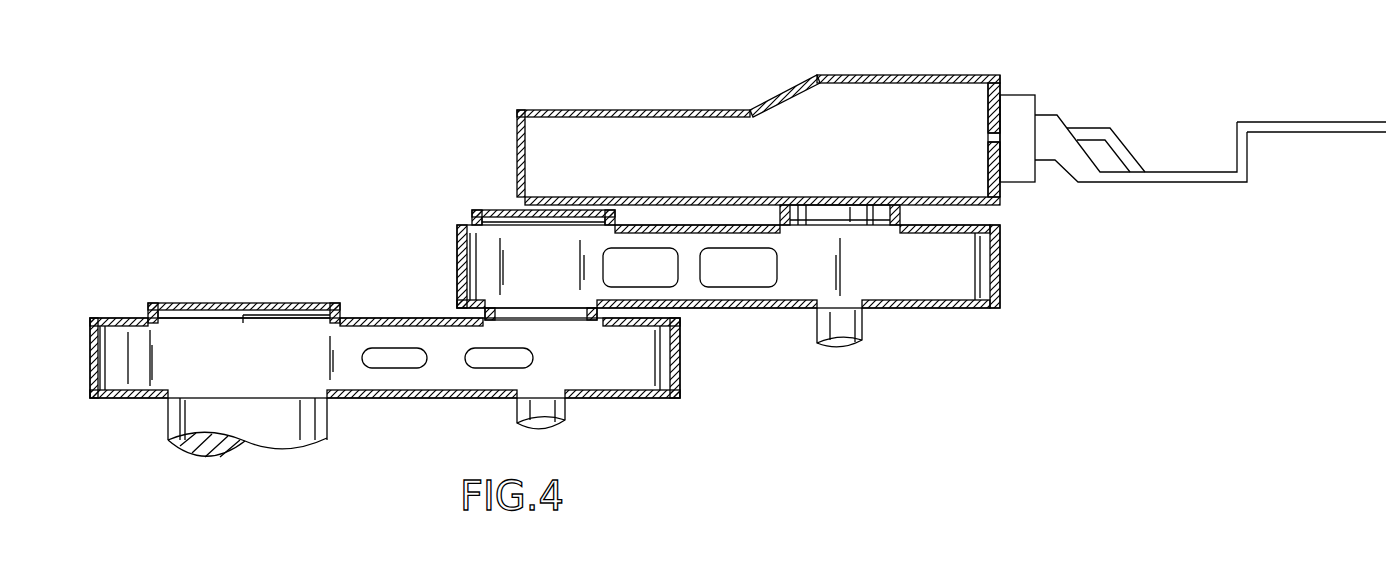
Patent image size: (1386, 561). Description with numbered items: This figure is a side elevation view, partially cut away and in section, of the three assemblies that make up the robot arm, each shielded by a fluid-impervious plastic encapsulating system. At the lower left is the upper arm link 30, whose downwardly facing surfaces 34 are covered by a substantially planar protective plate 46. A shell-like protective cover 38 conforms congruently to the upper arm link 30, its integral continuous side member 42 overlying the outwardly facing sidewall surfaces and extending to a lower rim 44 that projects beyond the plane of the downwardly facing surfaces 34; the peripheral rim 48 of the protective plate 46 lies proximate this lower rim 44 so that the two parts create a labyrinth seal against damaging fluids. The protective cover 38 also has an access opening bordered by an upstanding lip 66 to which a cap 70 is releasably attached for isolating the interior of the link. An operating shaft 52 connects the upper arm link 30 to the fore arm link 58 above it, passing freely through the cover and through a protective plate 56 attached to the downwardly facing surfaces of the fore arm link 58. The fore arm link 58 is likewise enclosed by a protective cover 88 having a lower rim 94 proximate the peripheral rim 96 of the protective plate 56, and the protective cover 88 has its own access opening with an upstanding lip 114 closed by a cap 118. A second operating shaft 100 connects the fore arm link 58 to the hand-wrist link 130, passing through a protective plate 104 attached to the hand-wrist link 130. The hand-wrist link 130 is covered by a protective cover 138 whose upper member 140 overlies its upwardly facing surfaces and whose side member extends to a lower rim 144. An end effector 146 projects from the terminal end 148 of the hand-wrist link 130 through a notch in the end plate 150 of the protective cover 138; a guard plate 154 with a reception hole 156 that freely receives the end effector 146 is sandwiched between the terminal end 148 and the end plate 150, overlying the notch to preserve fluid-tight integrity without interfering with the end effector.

The upper arm link 30 is at (278, 365).
The downwardly facing surfaces 34 is at (460, 399).
The protective cover 38 is at (390, 316).
The continuous side member 42 is at (90, 346).
The lower rim 44 is at (680, 396).
The protective plate 46 is at (392, 404).
The peripheral rim 48 is at (90, 388).
The operating shaft 52 is at (552, 424).
The protective plate 56 is at (742, 312).
The fore arm link 58 is at (931, 281).
The upstanding lip 66 is at (162, 304).
The cap 70 is at (255, 303).
The protective cover 88 is at (697, 220).
The lower rim 94 is at (993, 308).
The peripheral rim 96 is at (457, 310).
The operating shaft 100 is at (853, 345).
The protective plate 104 is at (615, 195).
The upstanding lip 114 is at (470, 222).
The cap 118 is at (508, 210).
The hand-wrist link 130 is at (873, 138).
The protective cover 138 is at (770, 95).
The upper member 140 is at (903, 72).
The lower rim 144 is at (1003, 195).
The end effector 146 is at (1320, 120).
The terminal end 148 is at (1003, 86).
The end plate 150 is at (1025, 183).
The guard plate 154 is at (985, 108).
The reception hole 156 is at (986, 140).